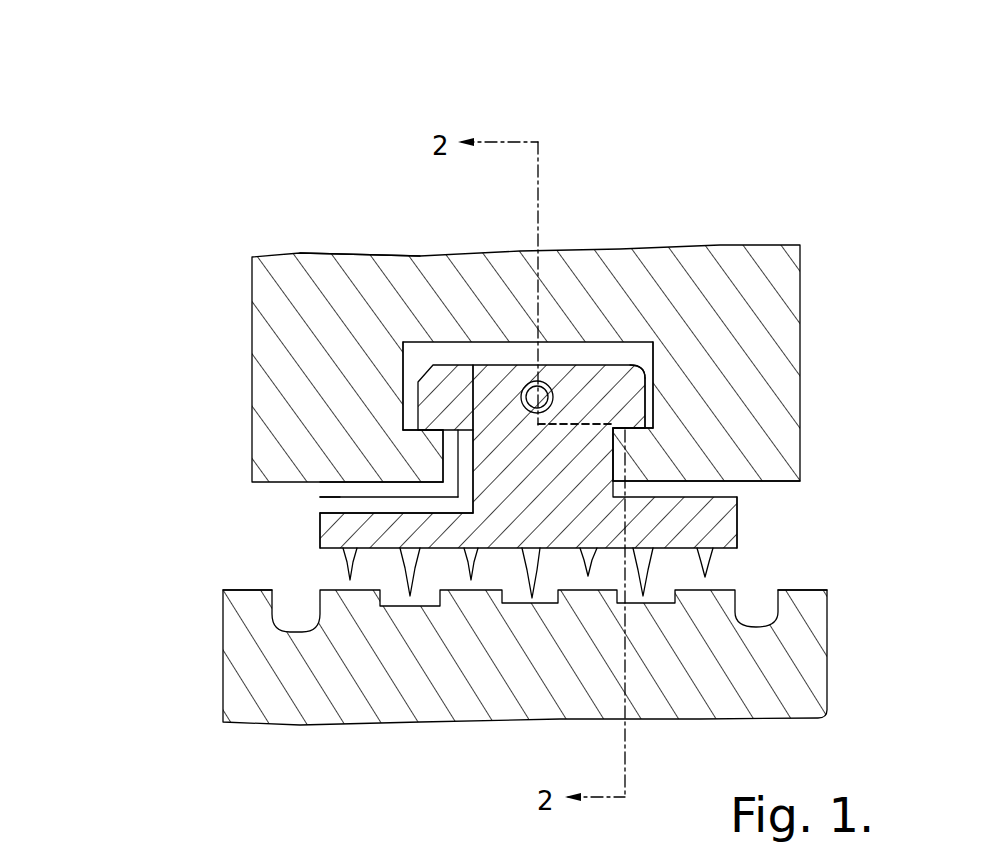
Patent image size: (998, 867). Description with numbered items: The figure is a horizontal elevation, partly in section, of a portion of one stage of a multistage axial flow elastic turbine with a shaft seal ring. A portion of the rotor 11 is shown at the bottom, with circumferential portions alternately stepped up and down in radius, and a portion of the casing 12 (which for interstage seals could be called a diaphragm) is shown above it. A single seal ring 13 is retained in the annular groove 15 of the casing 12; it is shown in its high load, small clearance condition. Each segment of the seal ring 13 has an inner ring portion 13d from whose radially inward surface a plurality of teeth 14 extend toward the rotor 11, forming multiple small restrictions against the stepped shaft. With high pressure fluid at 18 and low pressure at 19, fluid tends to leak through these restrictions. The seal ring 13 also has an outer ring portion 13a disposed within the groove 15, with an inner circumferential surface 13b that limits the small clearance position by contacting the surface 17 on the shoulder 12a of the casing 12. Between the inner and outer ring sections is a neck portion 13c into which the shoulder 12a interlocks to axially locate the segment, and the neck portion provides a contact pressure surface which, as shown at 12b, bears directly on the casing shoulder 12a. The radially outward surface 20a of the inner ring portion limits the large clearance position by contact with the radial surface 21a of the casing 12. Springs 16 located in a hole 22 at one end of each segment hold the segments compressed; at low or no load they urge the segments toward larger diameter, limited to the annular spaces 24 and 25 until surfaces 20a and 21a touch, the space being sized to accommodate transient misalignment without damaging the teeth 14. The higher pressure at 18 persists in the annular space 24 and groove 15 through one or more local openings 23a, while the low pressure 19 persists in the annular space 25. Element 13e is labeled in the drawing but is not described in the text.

The rotor 11 is at (347, 693).
The casing 12 is at (695, 262).
The shoulder of the casing 12a is at (433, 463).
The contact pressure surface 12b is at (613, 472).
The seal ring 13 is at (737, 520).
The outer ring portion 13a is at (615, 403).
The inner circumferential surface 13b is at (645, 410).
The neck portion 13c is at (553, 467).
The inner ring portion 13d is at (327, 537).
The head of punch 13e is at (575, 437).
The teeth 14 is at (710, 563).
The annular groove 15 is at (410, 383).
The springs 16 is at (543, 383).
The surface on the shoulder 17 is at (970, 211).
The high pressure side 18 is at (262, 578).
The low pressure side 19 is at (826, 579).
The radially outward surface 20a is at (389, 482).
The radial surface of the casing 21a is at (337, 498).
The hole 22 is at (407, 258).
The local opening 23a is at (333, 508).
The annular space 24 is at (327, 492).
The annular space 25 is at (723, 482).